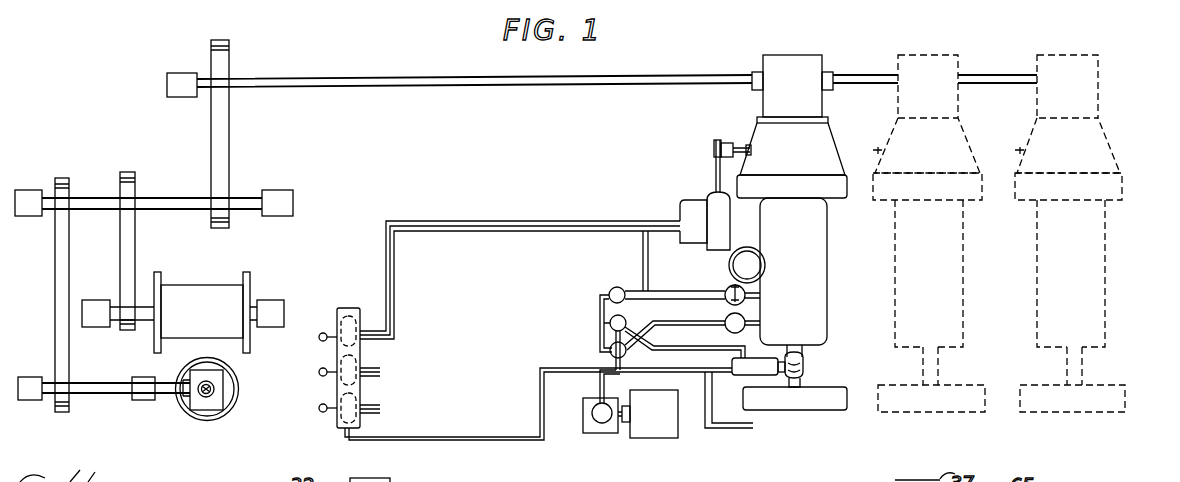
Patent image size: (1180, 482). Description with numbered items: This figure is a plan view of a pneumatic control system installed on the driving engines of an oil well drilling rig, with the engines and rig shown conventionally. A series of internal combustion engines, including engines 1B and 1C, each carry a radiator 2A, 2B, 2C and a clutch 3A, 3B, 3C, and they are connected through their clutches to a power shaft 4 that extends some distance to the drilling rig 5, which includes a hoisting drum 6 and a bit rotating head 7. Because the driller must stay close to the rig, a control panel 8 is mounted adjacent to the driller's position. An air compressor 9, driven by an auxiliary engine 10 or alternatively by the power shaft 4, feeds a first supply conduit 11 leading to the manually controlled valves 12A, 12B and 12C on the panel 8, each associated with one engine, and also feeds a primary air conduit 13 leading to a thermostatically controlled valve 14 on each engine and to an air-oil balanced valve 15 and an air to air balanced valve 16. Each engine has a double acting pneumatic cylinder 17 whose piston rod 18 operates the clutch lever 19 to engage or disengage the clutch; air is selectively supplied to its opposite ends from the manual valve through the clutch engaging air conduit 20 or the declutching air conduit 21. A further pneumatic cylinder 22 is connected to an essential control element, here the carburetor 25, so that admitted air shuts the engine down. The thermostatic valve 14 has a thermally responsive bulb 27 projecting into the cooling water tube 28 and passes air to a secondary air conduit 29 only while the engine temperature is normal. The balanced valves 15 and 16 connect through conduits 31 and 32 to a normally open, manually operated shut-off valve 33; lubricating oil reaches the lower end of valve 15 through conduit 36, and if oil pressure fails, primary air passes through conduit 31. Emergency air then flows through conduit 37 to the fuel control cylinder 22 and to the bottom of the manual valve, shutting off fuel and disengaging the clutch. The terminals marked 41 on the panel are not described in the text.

The internal combustion engine 1B is at (964, 268).
The internal combustion engine 1C is at (1104, 268).
The radiator 2A is at (793, 412).
The radiator 2B is at (922, 413).
The radiator 2C is at (1055, 413).
The clutch 3A is at (815, 141).
The clutch 3B is at (965, 141).
The clutch 3C is at (1100, 141).
The power shaft 4 is at (492, 82).
The oil well drilling rig 5 is at (183, 197).
The hoisting drum 6 is at (186, 296).
The bit rotating head 7 is at (214, 391).
The control panel 8 is at (345, 308).
The air compressor 9 is at (597, 433).
The auxiliary engine 10 is at (668, 436).
The first supply conduit 11 is at (441, 439).
The manually controlled valve 12A is at (343, 343).
The manually controlled valve 12B is at (342, 383).
The manually controlled valve 12C is at (342, 420).
The primary air conduit 13 is at (610, 373).
The thermostatically controlled valve 14 is at (742, 378).
The air-oil balanced valve 15 is at (610, 358).
The air to air balanced valve 16 is at (600, 314).
The double acting pneumatic cylinder 17 is at (728, 226).
The piston rod 18 is at (716, 182).
The clutch lever 19 is at (722, 140).
The clutch engaging air conduit 20 is at (691, 248).
The declutching air conduit 21 is at (680, 205).
The pneumatic cylinder 22 is at (747, 298).
The carburetor 25 is at (766, 267).
The thermally responsive bulb 27 is at (806, 365).
The cooling water tube 28 is at (800, 386).
The secondary air conduit 29 is at (733, 340).
The conduit 31 is at (600, 336).
The conduit 32 is at (600, 301).
The manually operated shut-off valve 33 is at (612, 288).
The conduit 36 is at (670, 327).
The conduit 37 is at (641, 252).
The terminal 41 is at (323, 333).